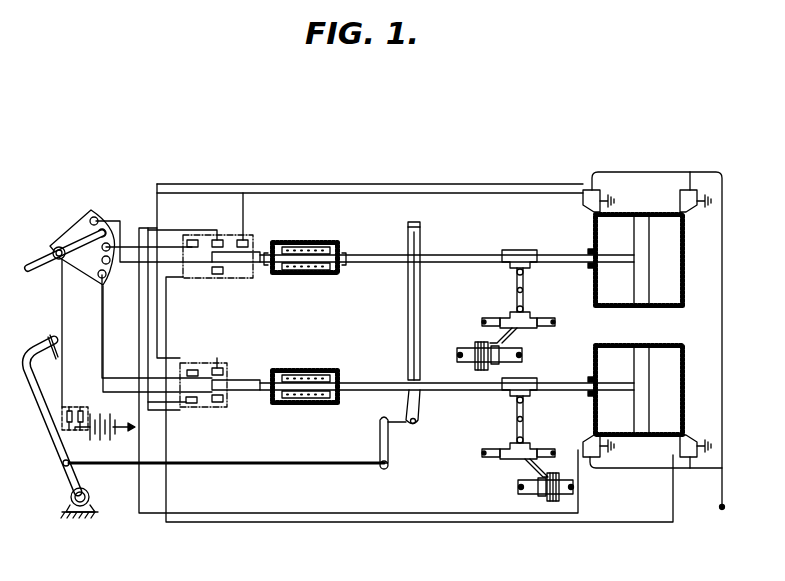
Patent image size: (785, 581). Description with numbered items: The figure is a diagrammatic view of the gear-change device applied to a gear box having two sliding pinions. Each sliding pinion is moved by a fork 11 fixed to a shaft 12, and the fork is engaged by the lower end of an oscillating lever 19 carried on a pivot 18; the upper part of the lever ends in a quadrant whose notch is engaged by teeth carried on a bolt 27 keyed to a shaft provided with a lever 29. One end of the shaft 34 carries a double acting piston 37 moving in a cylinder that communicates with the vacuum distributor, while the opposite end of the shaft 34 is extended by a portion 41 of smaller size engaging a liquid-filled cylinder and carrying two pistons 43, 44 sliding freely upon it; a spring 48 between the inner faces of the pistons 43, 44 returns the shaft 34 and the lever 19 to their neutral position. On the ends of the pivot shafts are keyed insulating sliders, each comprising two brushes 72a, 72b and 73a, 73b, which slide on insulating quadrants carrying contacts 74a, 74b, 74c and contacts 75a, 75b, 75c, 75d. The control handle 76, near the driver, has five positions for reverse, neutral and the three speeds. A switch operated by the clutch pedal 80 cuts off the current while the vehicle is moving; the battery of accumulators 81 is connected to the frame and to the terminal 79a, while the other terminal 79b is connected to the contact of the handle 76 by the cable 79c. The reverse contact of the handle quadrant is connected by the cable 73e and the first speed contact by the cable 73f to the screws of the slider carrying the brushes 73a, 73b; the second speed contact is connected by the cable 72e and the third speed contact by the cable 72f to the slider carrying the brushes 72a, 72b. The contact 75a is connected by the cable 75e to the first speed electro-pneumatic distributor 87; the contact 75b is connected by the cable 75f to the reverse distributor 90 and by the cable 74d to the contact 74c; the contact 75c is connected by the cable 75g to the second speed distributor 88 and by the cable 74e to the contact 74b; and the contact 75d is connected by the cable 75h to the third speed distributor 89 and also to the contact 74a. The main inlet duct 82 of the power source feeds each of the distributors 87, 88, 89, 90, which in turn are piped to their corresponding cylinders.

The fork 11 is at (520, 330).
The shaft 12 is at (546, 327).
The pivot 18 is at (516, 291).
The oscillating lever 19 is at (523, 274).
The bolt 27 is at (421, 311).
The lever 29 is at (394, 432).
The shaft 34 is at (470, 254).
The double acting piston 37 is at (644, 238).
The portion of smaller size 41 is at (305, 254).
The piston 43 is at (334, 275).
The piston 44 is at (290, 275).
The spring 48 is at (300, 280).
The brush 72a is at (221, 399).
The brush 72b is at (224, 372).
The cable 72e is at (112, 374).
The cable 72f is at (130, 393).
The brush 73a is at (228, 270).
The brush 73b is at (212, 268).
The cable 73e is at (106, 233).
The cable 73f is at (128, 233).
The contact 74a is at (220, 403).
The contact 74b is at (218, 367).
The contact 74c is at (191, 404).
The cable 74d is at (166, 330).
The cable 74e is at (158, 311).
The contact 75a is at (218, 239).
The contact 75b is at (218, 275).
The contact 75c is at (192, 239).
The contact 75d is at (246, 239).
The cable 75e is at (418, 512).
The cable 75f is at (430, 523).
The cable 75g is at (441, 175).
The cable 75h is at (386, 194).
The control handle 76 is at (40, 263).
The terminal 79a is at (80, 408).
The terminal 79b is at (70, 406).
The cable 79c is at (61, 303).
The clutch pedal 80 is at (40, 406).
The battery of accumulators 81 is at (94, 439).
The main inlet duct 82 is at (723, 288).
The first speed electro-pneumatic distributor 87 is at (588, 444).
The second speed electro-pneumatic distributor 88 is at (692, 207).
The third speed electro-pneumatic distributor 89 is at (590, 207).
The reverse electro-pneumatic distributor 90 is at (694, 440).